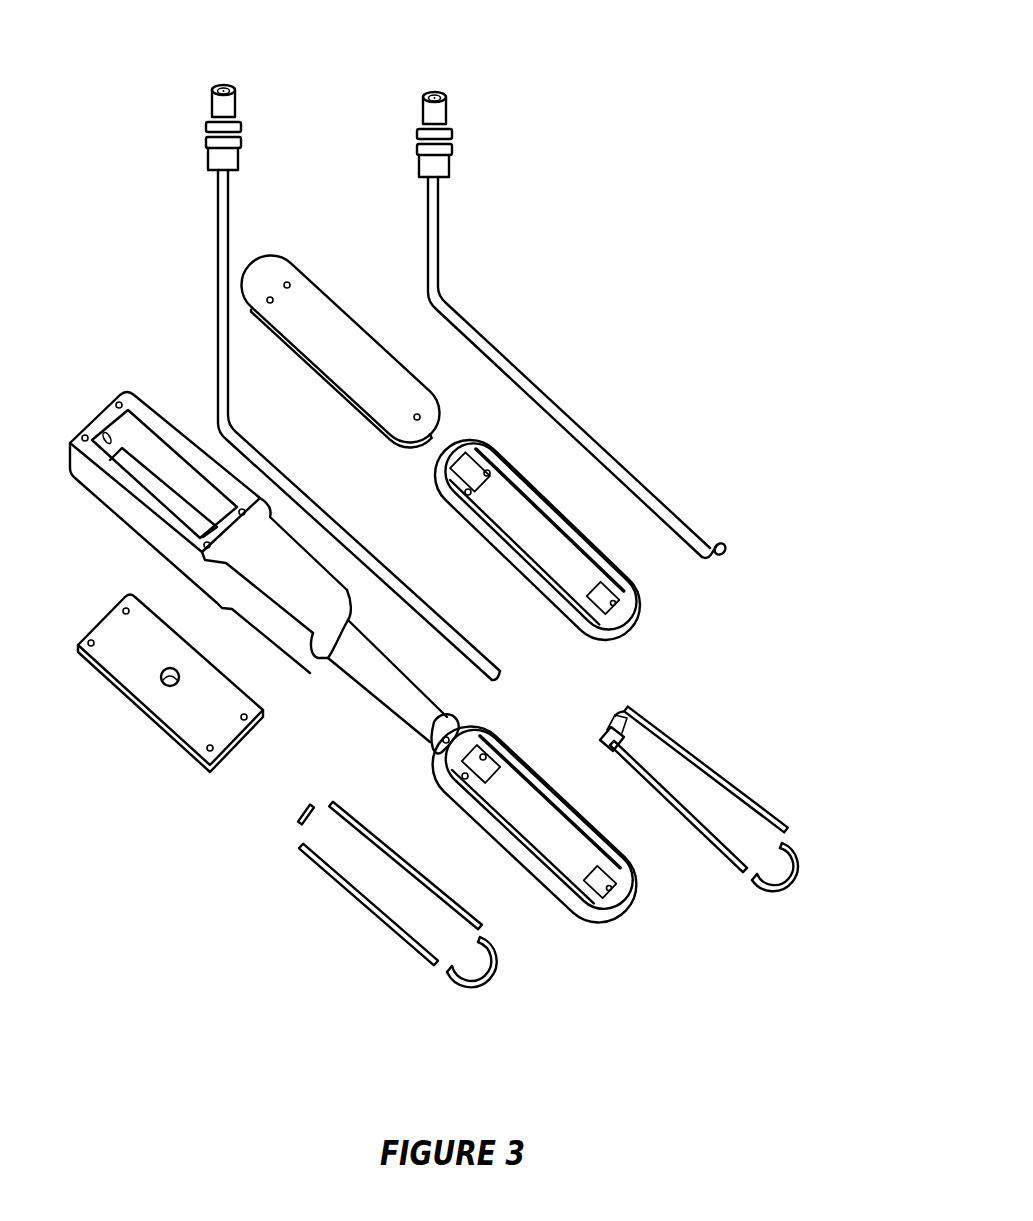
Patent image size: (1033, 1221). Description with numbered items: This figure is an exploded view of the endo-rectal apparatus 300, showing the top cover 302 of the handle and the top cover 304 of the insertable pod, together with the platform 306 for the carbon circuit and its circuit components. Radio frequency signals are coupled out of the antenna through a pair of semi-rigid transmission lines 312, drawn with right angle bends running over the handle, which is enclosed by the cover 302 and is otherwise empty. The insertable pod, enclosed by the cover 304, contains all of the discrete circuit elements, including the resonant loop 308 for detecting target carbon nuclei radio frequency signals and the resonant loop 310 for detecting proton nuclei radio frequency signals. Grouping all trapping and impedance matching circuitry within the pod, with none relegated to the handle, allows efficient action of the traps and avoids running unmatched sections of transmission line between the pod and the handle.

The handheld device assembly 300 is at (610, 187).
The top cover of the handle 302 is at (183, 705).
The top cover of the pod 304 is at (316, 310).
The platform for the carbon circuit 306 is at (620, 627).
The resonant loop for detecting target carbon nuclei RF signals 308 is at (752, 780).
The resonant loop for detecting proton nuclei RF signals 310 is at (378, 912).
The semi-rigid transmission lines 312 is at (222, 203).